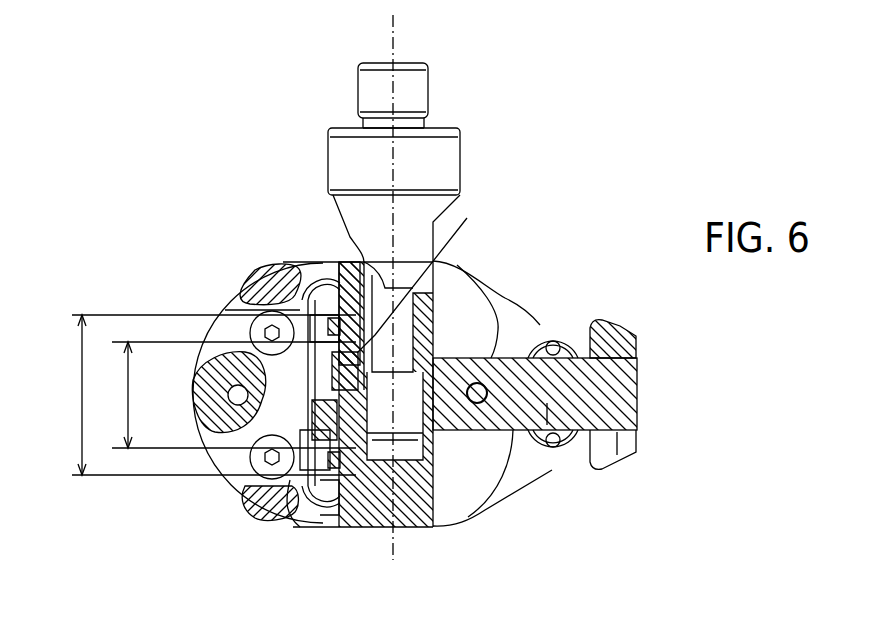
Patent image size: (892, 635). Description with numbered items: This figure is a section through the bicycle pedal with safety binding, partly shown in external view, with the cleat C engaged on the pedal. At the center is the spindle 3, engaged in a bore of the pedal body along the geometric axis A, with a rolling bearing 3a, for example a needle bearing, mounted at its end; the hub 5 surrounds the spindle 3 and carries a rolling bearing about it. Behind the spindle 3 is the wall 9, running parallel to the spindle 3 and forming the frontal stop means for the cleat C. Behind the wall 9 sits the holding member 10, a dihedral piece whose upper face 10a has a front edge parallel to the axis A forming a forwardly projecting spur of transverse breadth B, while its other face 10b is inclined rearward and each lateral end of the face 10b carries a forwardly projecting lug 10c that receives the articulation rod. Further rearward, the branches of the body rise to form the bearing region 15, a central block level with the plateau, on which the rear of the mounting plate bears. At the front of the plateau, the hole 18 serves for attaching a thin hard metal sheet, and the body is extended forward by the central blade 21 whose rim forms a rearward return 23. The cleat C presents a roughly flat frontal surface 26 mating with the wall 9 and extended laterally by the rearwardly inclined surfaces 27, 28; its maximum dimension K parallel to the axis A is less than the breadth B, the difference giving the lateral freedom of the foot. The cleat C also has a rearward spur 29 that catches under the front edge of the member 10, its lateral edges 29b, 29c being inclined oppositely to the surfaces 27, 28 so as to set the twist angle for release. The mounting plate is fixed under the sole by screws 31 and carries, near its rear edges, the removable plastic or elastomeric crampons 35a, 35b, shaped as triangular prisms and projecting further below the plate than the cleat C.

The spindle 3 is at (414, 98).
The rolling bearing 3a is at (458, 432).
The hub 5 is at (346, 168).
The wall 9 is at (343, 530).
The member 10 is at (292, 520).
The upper face 10a is at (287, 262).
The face 10b is at (228, 310).
The lug 10c is at (332, 530).
The bearing region 15 is at (200, 398).
The hole 18 is at (478, 387).
The central blade 21 is at (553, 442).
The return 23 is at (602, 330).
The frontal surface 26 is at (400, 527).
The inclined surface 27 is at (366, 528).
The inclined surface 28 is at (322, 262).
The spur 29 is at (240, 488).
The lateral edge 29b is at (262, 292).
The lateral edge 29c is at (302, 530).
The screw 31 is at (554, 338).
The crampon 35a is at (252, 506).
The crampon 35b is at (258, 275).
The geometric axis A is at (390, 44).
The transverse breadth B is at (80, 395).
The cleat C is at (421, 277).
The maximum dimension K is at (127, 396).